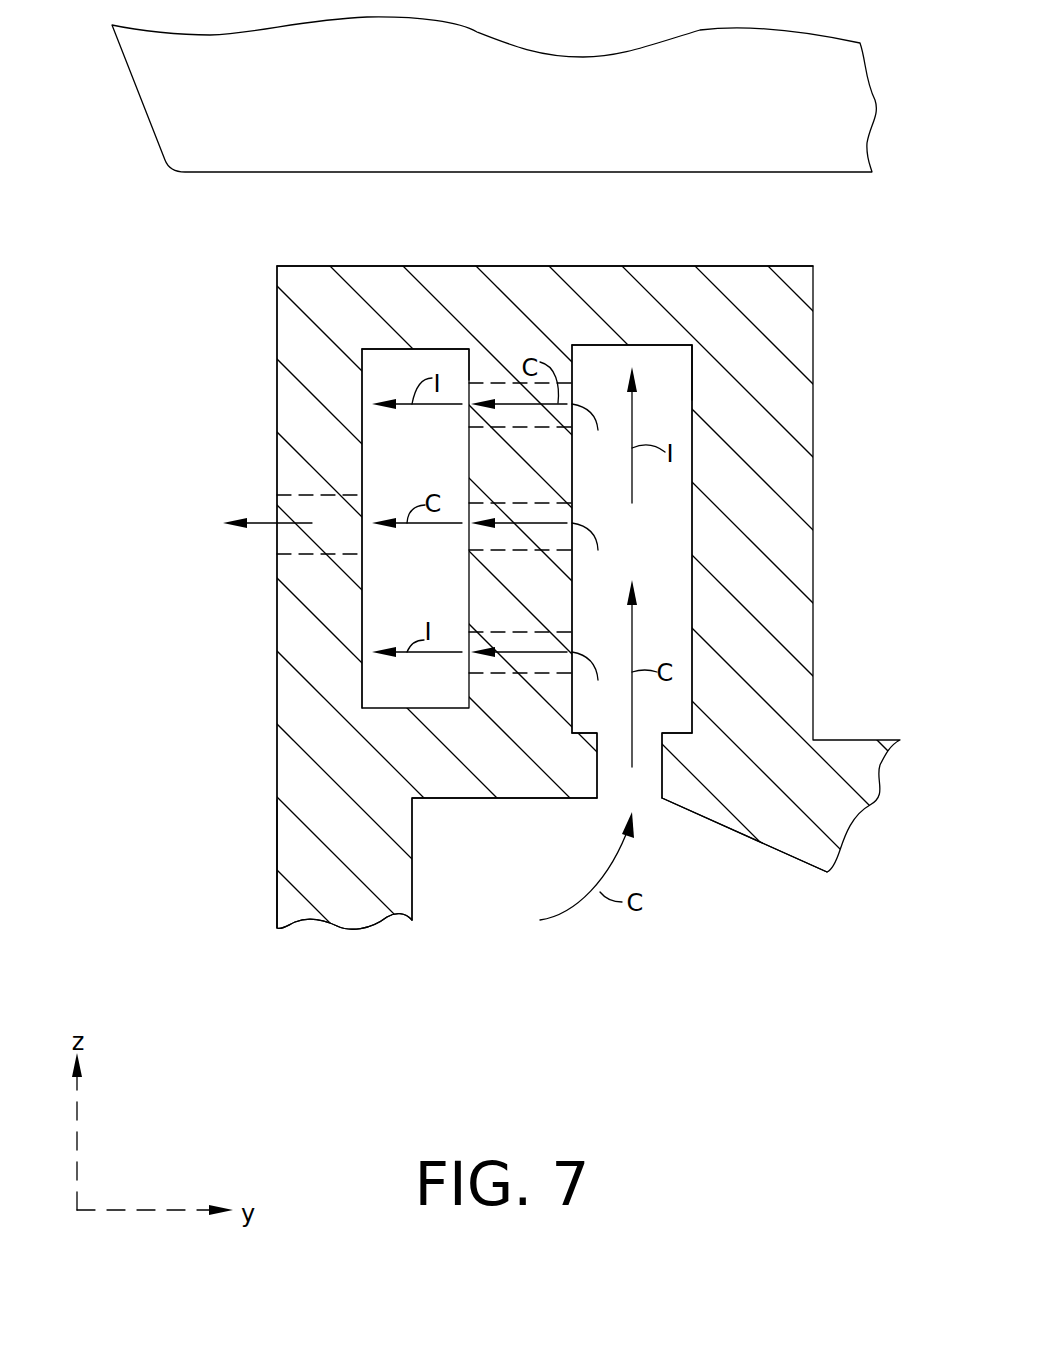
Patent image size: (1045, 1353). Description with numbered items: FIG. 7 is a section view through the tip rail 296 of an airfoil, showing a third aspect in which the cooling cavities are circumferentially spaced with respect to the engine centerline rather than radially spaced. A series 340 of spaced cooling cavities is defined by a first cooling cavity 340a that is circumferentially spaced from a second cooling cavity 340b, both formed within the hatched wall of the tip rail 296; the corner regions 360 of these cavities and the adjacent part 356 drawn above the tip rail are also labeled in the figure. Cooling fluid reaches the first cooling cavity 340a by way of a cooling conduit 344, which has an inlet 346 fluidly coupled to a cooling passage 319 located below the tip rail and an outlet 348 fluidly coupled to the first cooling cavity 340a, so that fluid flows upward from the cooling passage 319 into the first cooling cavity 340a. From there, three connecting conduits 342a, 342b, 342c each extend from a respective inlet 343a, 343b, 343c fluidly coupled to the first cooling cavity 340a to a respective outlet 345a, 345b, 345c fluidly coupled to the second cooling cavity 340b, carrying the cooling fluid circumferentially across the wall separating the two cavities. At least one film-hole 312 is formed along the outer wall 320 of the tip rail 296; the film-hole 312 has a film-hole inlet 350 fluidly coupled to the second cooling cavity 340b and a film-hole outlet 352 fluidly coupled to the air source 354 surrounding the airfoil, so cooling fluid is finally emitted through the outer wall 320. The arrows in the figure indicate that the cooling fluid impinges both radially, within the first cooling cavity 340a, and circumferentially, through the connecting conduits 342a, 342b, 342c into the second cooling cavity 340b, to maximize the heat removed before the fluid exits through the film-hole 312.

The hot gas path component 356 is at (481, 138).
The series of spaced cooling cavities 340 is at (250, 308).
The tip rail 296 is at (373, 266).
The corner fillet 360 is at (363, 368).
The air source 354 is at (81, 562).
The second cooling cavity 340b is at (450, 602).
The film-hole inlet 350 is at (372, 494).
The first cooling cavity 340a is at (684, 580).
The connecting conduit 342c is at (493, 392).
The connecting conduit 342b is at (561, 503).
The connecting conduit 342a is at (565, 632).
The inlet 343c is at (574, 391).
The inlet 343b is at (572, 516).
The inlet 343a is at (572, 655).
The outlet 345c is at (469, 412).
The outlet 345b is at (469, 528).
The outlet 345a is at (469, 660).
The film-hole outlet 352 is at (278, 513).
The film-hole 312 is at (323, 535).
The outlet 348 is at (647, 732).
The cooling conduit 344 is at (635, 772).
The inlet 346 is at (643, 798).
The cooling passage 319 is at (458, 868).
The outer wall 320 is at (265, 800).